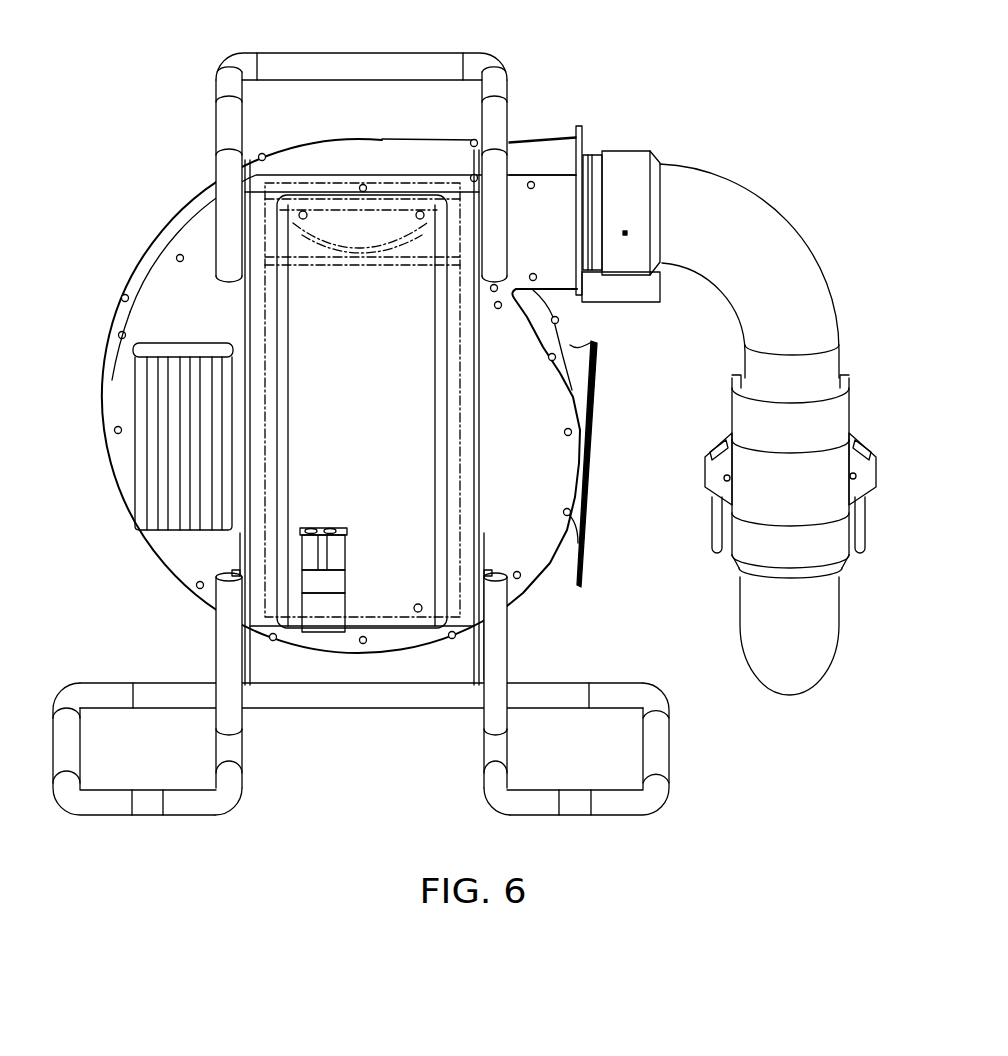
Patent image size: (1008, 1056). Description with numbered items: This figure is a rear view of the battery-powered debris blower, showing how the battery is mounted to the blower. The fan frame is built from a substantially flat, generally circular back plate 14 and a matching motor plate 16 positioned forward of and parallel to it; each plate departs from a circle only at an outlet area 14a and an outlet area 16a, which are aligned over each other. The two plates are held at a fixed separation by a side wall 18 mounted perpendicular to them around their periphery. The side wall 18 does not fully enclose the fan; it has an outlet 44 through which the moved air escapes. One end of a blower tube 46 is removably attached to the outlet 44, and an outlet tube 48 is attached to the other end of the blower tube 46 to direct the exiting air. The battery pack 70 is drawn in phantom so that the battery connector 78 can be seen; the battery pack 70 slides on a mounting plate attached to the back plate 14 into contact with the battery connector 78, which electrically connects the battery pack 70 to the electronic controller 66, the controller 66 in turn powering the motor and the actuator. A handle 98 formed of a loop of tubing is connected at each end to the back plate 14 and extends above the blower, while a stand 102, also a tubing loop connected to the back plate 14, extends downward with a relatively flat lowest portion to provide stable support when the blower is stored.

The back plate 14 is at (180, 557).
The outlet area 14a is at (549, 193).
The motor plate 16 is at (163, 229).
The outlet area 16a is at (540, 137).
The side wall 18 is at (135, 291).
The outlet 44 is at (583, 157).
The blower tube 46 is at (762, 218).
The outlet tube 48 is at (790, 686).
The electronic controller 66 is at (140, 447).
The battery pack 70 is at (377, 515).
The battery connector 78 is at (312, 557).
The handle 98 is at (247, 67).
The stand 102 is at (88, 800).